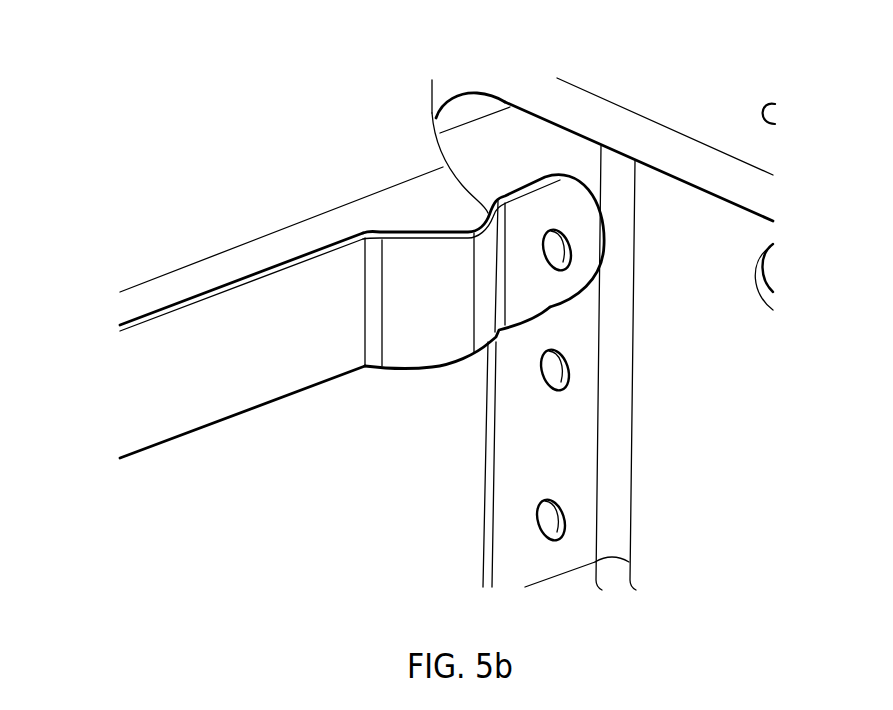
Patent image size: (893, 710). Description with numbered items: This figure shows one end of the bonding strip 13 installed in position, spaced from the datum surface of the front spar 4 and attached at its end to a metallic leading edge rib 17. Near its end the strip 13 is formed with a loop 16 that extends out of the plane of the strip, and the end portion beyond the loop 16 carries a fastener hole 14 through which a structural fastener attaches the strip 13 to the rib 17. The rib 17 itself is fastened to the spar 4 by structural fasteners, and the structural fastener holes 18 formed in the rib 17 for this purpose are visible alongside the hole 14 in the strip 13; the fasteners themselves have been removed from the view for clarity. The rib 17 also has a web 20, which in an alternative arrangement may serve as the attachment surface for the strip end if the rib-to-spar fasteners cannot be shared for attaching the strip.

The front spar 4 is at (152, 232).
The strip 13 is at (153, 410).
The hole 14 is at (563, 248).
The loop 16 is at (417, 258).
The metallic leading edge rib 17 is at (703, 103).
The structural fastener holes 18 is at (558, 372).
The web 20 is at (743, 360).